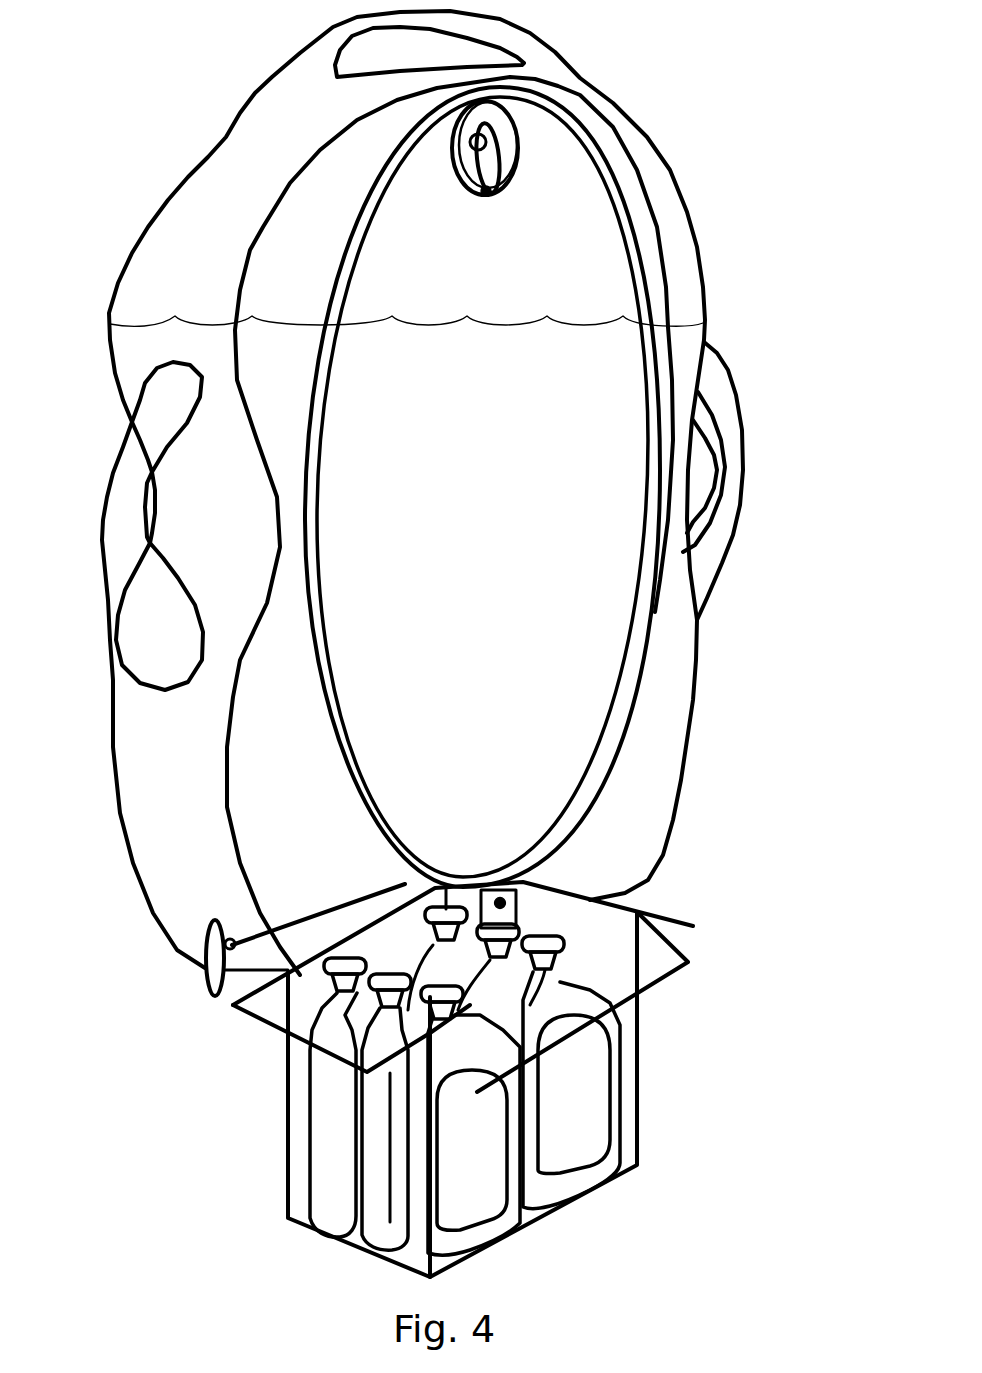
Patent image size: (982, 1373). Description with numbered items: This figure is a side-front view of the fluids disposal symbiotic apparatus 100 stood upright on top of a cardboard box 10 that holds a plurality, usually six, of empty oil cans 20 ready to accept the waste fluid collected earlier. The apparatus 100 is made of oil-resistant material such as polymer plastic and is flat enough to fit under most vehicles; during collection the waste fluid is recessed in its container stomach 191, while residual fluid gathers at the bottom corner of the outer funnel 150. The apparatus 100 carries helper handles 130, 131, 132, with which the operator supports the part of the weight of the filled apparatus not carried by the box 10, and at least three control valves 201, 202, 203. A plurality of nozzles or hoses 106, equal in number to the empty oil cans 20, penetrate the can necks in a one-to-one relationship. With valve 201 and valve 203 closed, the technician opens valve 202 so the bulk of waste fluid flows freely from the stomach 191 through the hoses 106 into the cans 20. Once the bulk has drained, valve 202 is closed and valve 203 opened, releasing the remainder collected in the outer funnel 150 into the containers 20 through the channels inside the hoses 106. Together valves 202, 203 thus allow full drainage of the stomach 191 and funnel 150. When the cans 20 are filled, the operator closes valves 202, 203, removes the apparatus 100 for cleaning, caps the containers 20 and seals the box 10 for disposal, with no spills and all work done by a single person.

The box 10 is at (635, 1053).
The empty oil cans 20 is at (315, 1118).
The fluids disposal symbiotic apparatus 100 is at (673, 212).
The nozzles 106 is at (450, 991).
The helper handle 130 is at (373, 31).
The helper handle 131 is at (737, 481).
The helper handle 132 is at (120, 507).
The outer funnel 150 is at (527, 760).
The container stomach 191 is at (176, 734).
The control valve 201 is at (513, 143).
The control valve 202 is at (203, 962).
The control valve 203 is at (505, 905).